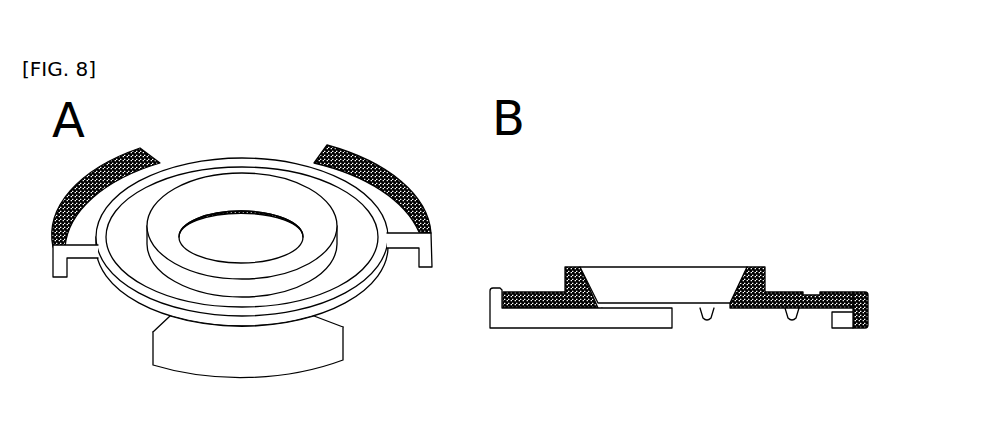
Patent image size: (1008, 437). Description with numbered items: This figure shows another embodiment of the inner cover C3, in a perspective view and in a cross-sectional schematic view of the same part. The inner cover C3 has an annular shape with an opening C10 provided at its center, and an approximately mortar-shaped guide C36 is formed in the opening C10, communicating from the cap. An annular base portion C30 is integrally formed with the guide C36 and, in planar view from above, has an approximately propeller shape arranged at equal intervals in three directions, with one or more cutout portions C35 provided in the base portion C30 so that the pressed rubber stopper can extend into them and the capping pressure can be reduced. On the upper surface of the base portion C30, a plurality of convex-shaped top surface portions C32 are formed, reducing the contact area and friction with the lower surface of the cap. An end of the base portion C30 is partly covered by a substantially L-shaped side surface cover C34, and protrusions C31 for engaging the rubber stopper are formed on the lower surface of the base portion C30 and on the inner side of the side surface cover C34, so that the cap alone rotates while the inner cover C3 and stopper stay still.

The inner cover C3 is at (377, 149).
The opening C10 is at (246, 232).
The base portion C30 is at (805, 301).
The protrusions C31 is at (98, 262).
The top surface portions C32 is at (192, 165).
The side surface cover C34 is at (862, 291).
The cutout portions C35 is at (370, 300).
The guide C36 is at (327, 197).